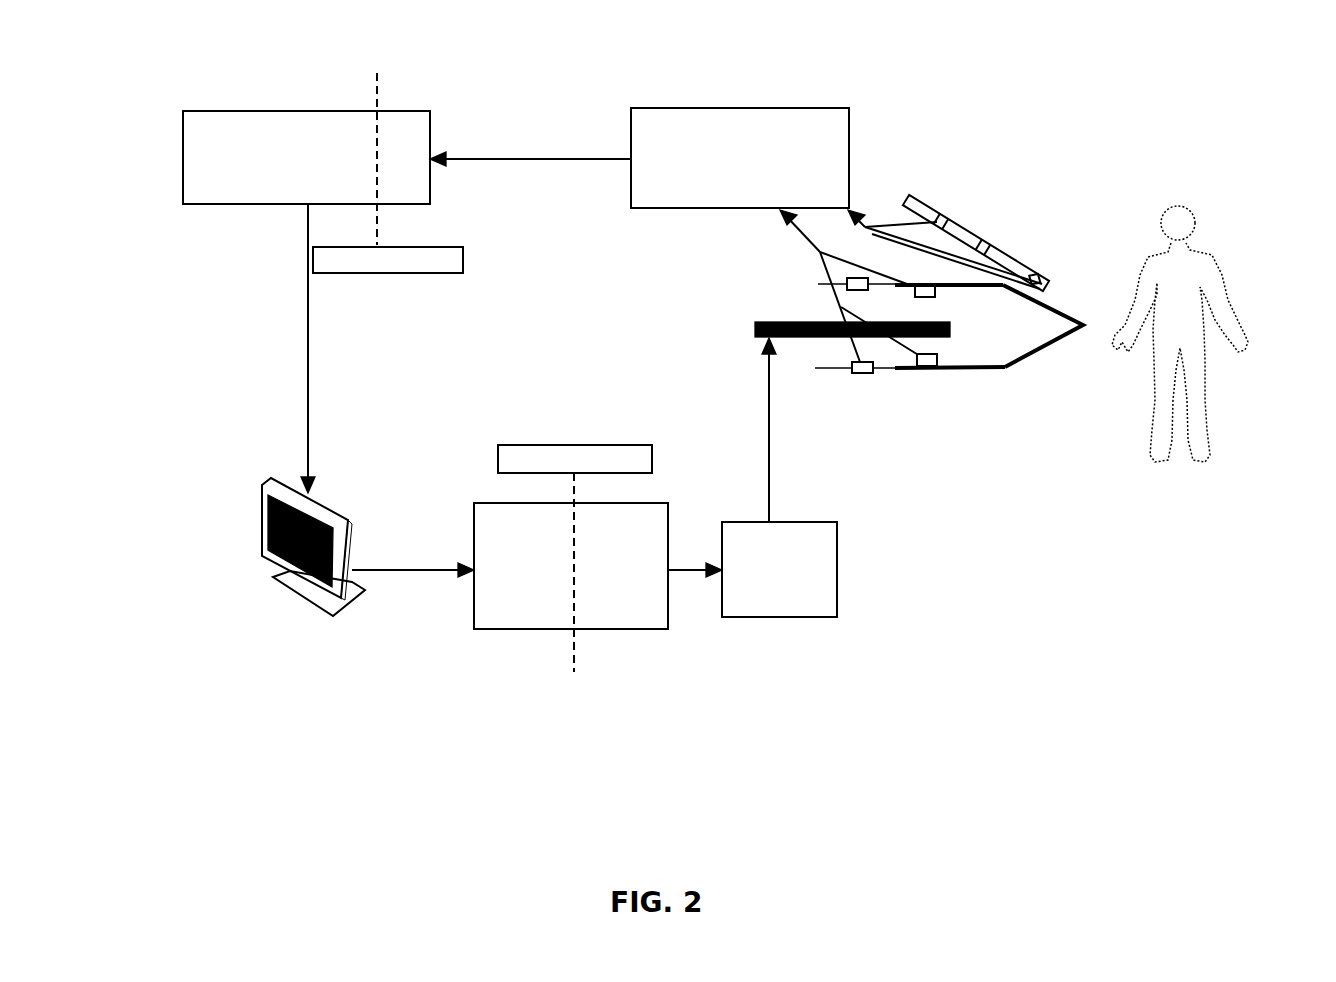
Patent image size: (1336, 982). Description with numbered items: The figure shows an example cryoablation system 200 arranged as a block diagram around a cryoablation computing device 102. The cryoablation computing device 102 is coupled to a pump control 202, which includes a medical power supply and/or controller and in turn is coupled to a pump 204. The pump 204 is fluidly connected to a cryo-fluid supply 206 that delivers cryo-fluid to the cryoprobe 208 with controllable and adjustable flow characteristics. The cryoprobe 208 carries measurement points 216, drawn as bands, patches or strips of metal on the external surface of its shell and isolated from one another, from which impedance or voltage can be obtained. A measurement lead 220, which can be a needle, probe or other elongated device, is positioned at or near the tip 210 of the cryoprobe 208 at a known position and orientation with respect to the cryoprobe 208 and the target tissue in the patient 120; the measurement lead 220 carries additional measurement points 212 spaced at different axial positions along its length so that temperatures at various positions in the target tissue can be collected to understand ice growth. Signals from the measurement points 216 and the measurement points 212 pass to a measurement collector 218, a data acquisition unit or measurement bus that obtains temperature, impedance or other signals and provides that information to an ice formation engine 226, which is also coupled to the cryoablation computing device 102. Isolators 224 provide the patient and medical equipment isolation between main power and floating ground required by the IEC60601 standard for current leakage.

The cryoablation system 200 is at (128, 40).
The ice formation engine 226 is at (265, 110).
The measurement collector 218 is at (755, 108).
The isolators 224 is at (600, 445).
The cryoablation computing device 102 is at (285, 588).
The pump control 202 is at (610, 630).
The pump 204 is at (810, 618).
The cryo-fluid supply 206 is at (777, 322).
The measurement points 216 is at (869, 392).
The cryoprobe 208 is at (958, 369).
The tip 210 is at (1042, 350).
The measurement points 212 is at (977, 230).
The measurement lead 220 is at (952, 165).
The patient 120 is at (1210, 250).